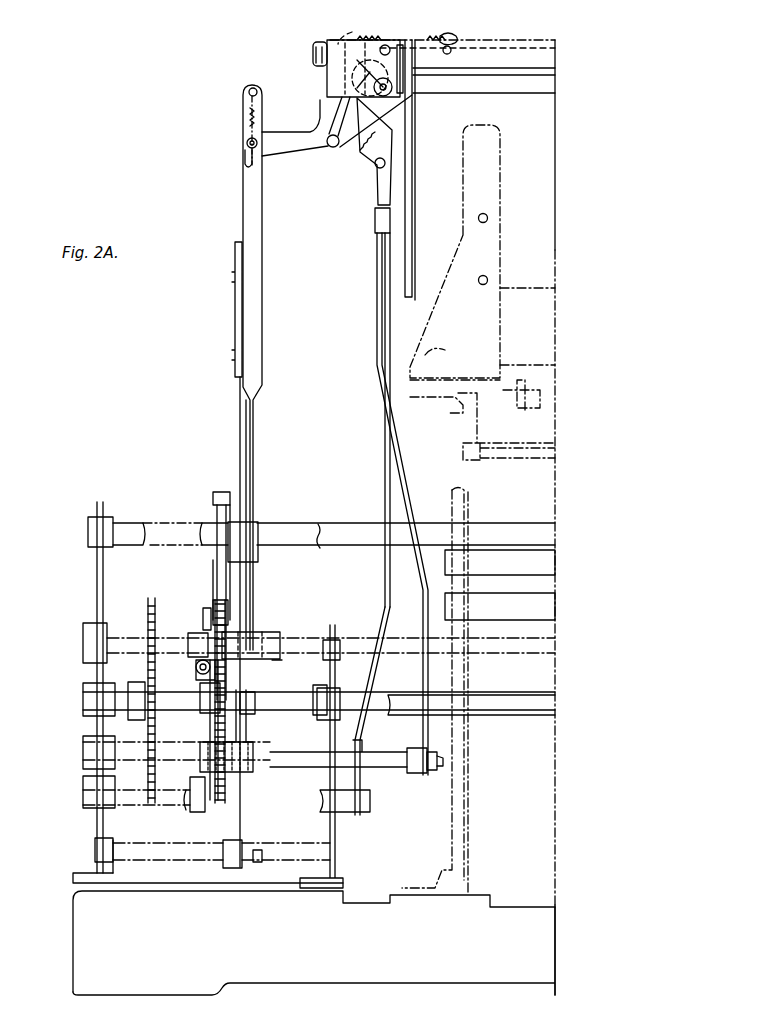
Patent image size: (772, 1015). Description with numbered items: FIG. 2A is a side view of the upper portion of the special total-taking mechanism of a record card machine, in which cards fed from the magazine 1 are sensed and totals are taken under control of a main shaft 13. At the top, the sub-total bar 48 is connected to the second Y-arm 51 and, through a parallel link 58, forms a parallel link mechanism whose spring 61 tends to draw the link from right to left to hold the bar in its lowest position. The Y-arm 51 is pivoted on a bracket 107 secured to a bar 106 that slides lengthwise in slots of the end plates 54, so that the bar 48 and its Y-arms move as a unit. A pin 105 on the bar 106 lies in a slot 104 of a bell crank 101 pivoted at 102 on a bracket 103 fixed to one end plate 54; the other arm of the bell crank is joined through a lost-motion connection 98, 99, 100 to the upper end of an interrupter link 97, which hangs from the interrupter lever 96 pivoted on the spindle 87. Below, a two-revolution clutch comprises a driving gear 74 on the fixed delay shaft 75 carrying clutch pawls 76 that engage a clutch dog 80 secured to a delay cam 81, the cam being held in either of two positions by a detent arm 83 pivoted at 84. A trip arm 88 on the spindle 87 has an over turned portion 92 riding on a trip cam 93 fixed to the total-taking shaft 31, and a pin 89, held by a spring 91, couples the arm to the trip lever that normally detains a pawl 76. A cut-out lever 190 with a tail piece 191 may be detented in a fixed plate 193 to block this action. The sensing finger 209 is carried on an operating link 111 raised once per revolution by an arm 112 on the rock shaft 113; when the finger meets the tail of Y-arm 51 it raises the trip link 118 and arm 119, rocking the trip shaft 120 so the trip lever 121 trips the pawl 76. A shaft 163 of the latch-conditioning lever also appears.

The magazine 1 is at (520, 252).
The main shaft 13 is at (403, 702).
The total-taking shaft 31 is at (258, 535).
The sub-total bar 48 is at (545, 90).
The second Y-arm 51 is at (378, 145).
The end plate 54 is at (376, 235).
The link 58 is at (530, 60).
The spring 61 is at (450, 45).
The driving gear 74 is at (212, 728).
The delay shaft 75 is at (255, 700).
The clutch pawl 76 is at (278, 642).
The clutch dog 80 is at (330, 640).
The delay cam 81 is at (245, 730).
The detent arm 83 is at (242, 850).
The pivot 84 is at (260, 855).
The spindle 87 is at (188, 637).
The trip arm 88 is at (220, 492).
The pin 89 is at (187, 647).
The spring 91 is at (195, 642).
The over turned portion 92 is at (228, 500).
The trip cam 93 is at (228, 578).
The interrupter lever 96 is at (235, 655).
The interrupter link 97 is at (250, 393).
The lost-motion connection 98 is at (243, 160).
The lost-motion connection 99 is at (243, 143).
The lost-motion connection 100 is at (243, 101).
The bell crank 101 is at (290, 131).
The pivot 102 is at (330, 147).
The bracket 103 is at (410, 107).
The slot 104 is at (322, 64).
The pin 105 is at (313, 56).
The bar 106 is at (345, 40).
The bracket 107 is at (330, 88).
The operating link 111 is at (387, 600).
The arm 112 is at (360, 747).
The rock shaft 113 is at (358, 812).
The trip link 118 is at (415, 563).
The arm 119 is at (418, 773).
The trip shaft 120 is at (430, 770).
The trip lever 121 is at (222, 775).
The shaft 163 is at (318, 528).
The cut-out lever 190 is at (193, 663).
The tail piece 191 is at (203, 607).
The fixed plate 193 is at (200, 628).
The sensing finger 209 is at (383, 222).